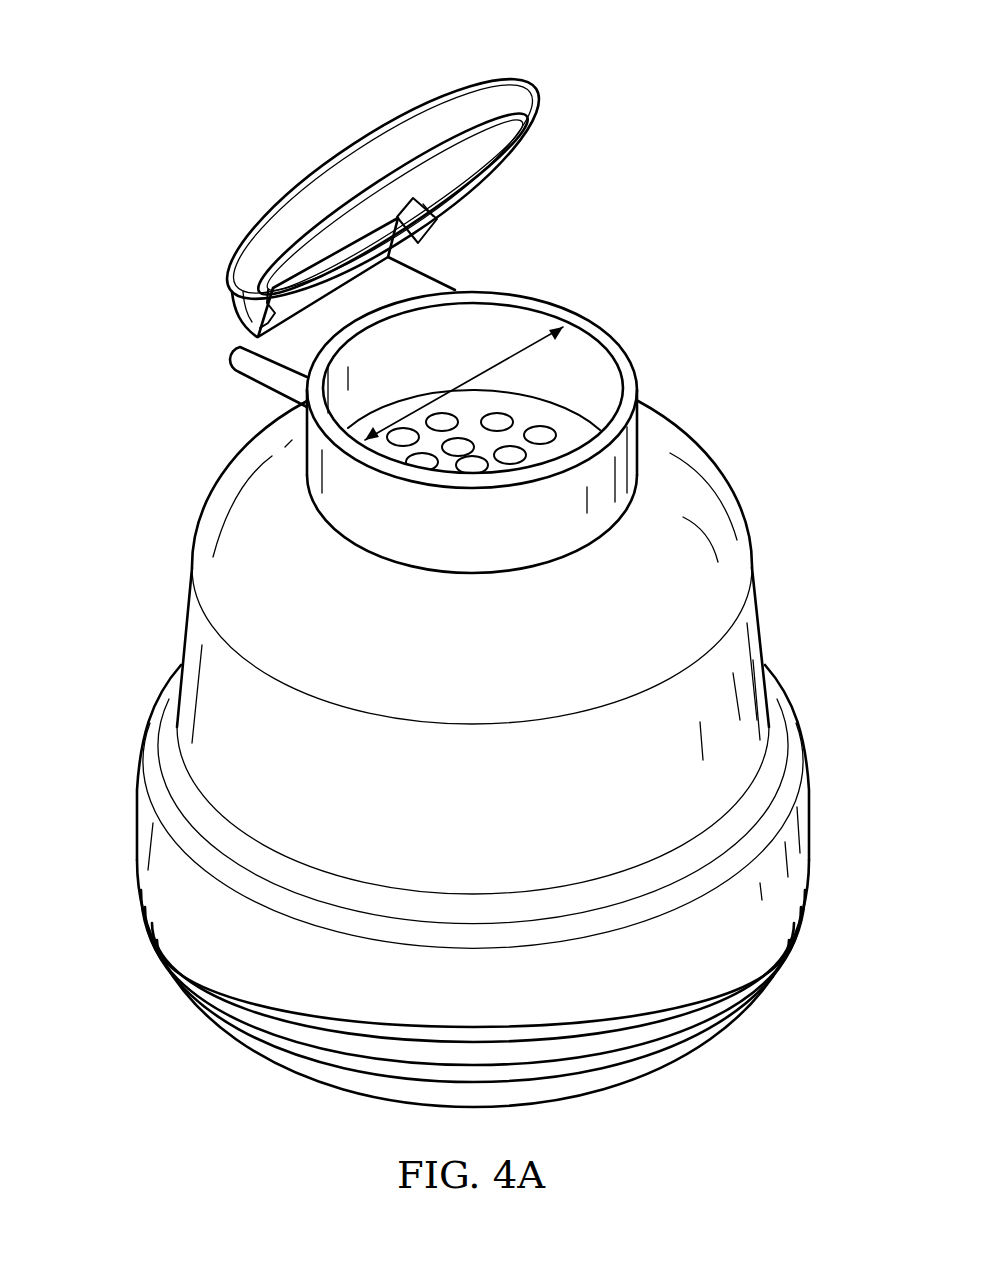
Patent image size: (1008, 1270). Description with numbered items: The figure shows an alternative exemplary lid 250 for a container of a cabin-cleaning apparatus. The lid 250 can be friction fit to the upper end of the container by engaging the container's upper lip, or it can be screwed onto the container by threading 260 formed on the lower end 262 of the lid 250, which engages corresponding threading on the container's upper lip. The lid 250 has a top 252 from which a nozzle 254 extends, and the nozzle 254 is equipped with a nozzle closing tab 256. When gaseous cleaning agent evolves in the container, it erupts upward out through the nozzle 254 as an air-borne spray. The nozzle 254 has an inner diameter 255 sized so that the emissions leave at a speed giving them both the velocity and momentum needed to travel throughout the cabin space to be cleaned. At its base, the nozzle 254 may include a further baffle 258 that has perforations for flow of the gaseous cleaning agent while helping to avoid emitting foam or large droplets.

The lid 250 is at (758, 623).
The top 252 is at (690, 452).
The nozzle 254 is at (617, 342).
The inner diameter 255 is at (468, 378).
The nozzle closing tab 256 is at (506, 76).
The further baffle 258 is at (553, 420).
The threading 260 is at (120, 918).
The lower end 262 is at (822, 858).